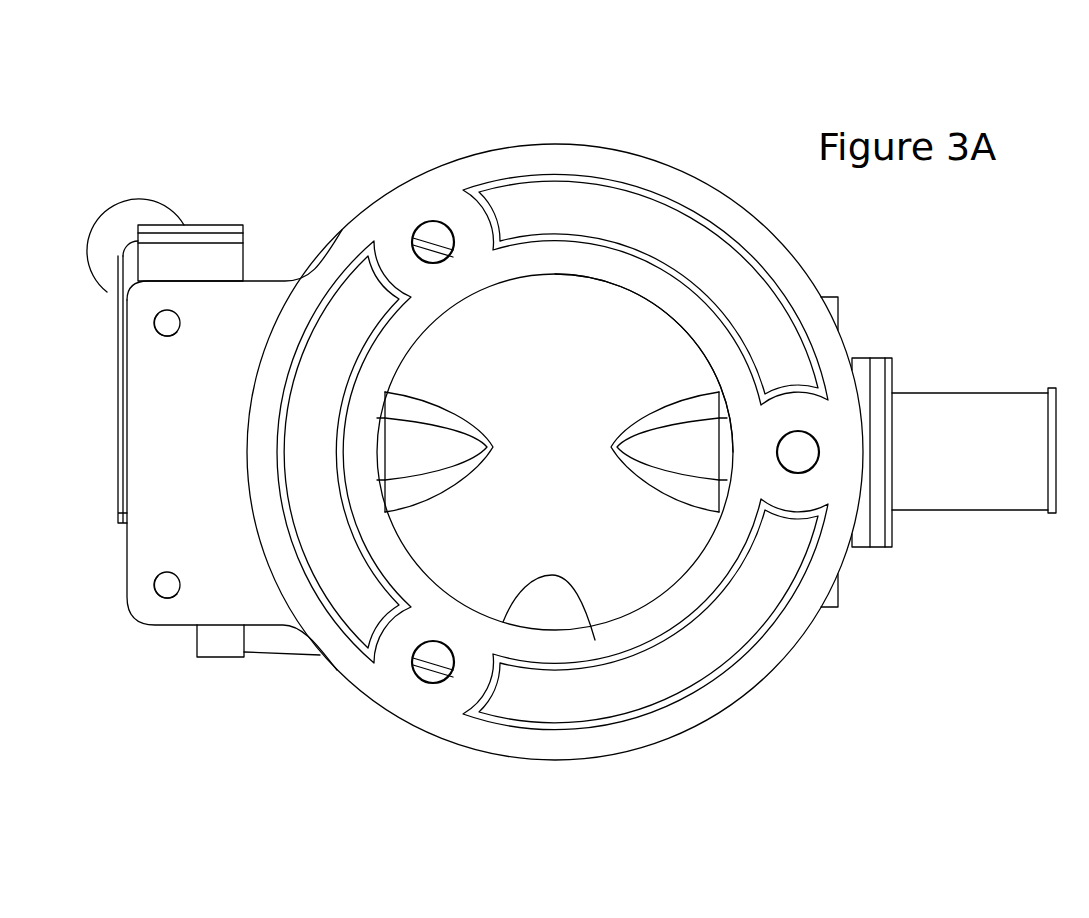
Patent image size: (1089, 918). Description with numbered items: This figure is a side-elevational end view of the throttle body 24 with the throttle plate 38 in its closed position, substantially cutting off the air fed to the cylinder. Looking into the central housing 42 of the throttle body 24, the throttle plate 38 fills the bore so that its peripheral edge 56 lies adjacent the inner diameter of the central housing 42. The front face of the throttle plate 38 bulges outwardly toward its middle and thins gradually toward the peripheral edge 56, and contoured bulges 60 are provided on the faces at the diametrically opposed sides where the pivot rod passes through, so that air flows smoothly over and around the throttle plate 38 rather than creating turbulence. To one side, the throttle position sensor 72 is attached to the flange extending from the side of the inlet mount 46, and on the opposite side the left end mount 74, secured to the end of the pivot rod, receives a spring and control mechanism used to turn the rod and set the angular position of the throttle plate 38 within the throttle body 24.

The throttle body 24 is at (571, 447).
The throttle plate 38 is at (577, 370).
The central housing 42 is at (595, 640).
The inlet mount 46 is at (757, 660).
The peripheral edge 56 is at (670, 313).
The contoured bulges 60 is at (447, 452).
The throttle position sensor 72 is at (223, 224).
The left end mount 74 is at (977, 463).